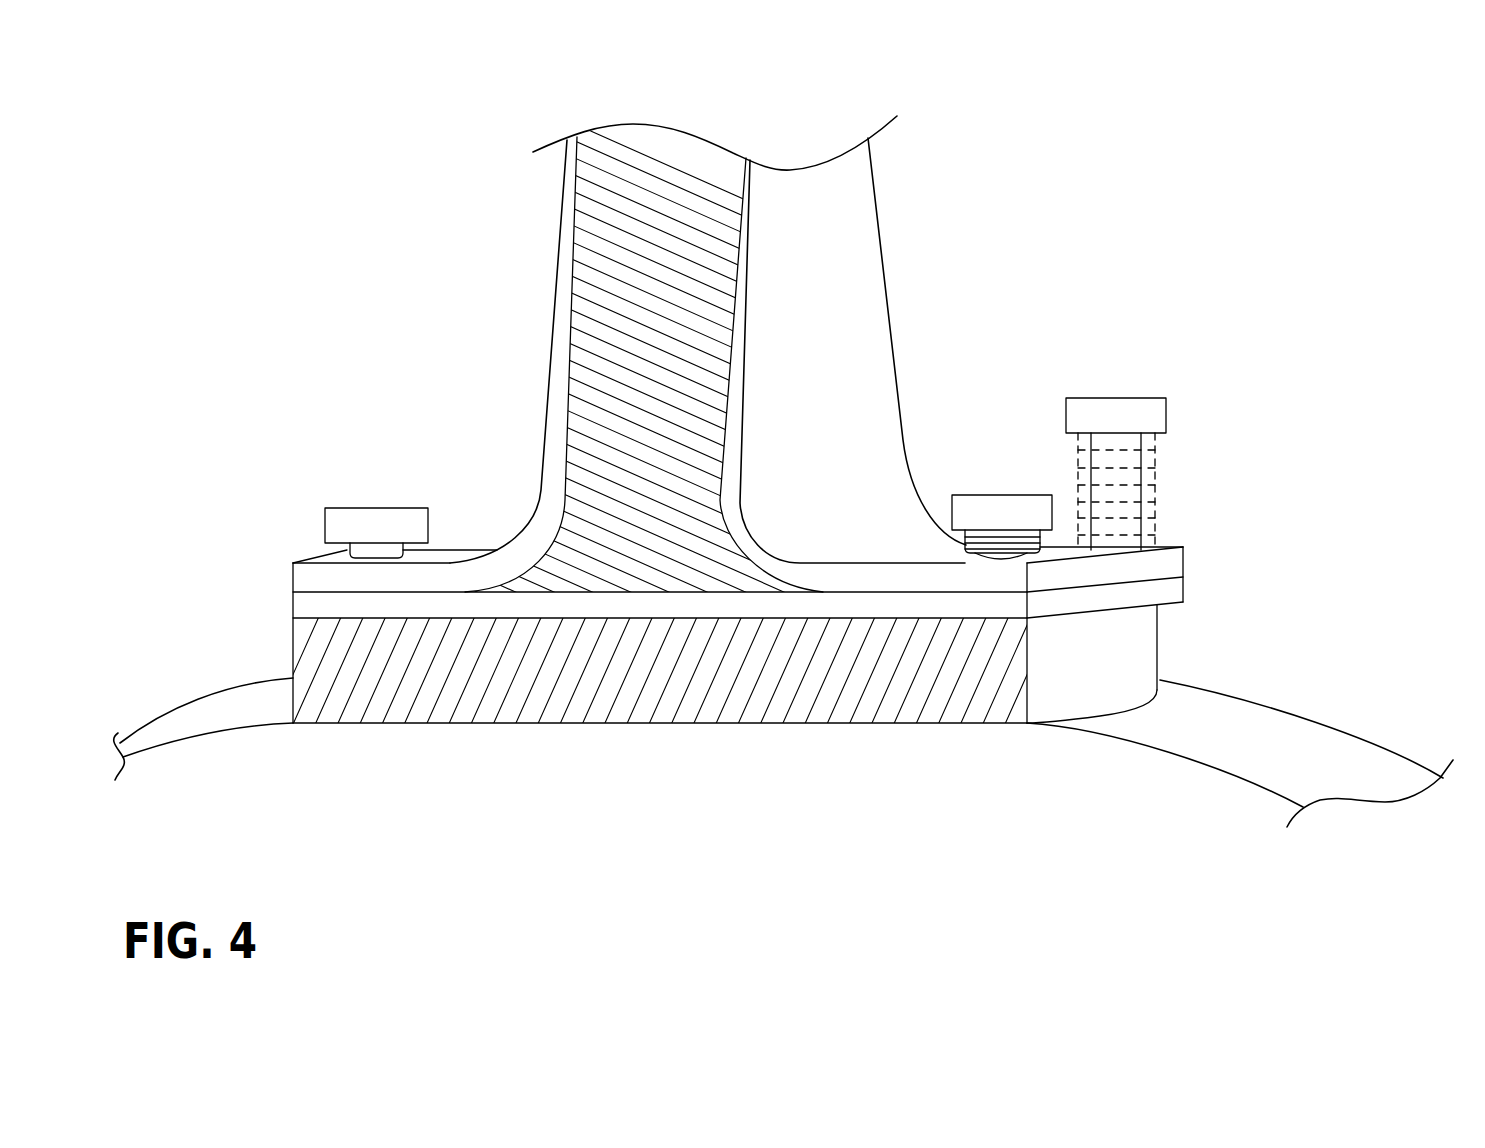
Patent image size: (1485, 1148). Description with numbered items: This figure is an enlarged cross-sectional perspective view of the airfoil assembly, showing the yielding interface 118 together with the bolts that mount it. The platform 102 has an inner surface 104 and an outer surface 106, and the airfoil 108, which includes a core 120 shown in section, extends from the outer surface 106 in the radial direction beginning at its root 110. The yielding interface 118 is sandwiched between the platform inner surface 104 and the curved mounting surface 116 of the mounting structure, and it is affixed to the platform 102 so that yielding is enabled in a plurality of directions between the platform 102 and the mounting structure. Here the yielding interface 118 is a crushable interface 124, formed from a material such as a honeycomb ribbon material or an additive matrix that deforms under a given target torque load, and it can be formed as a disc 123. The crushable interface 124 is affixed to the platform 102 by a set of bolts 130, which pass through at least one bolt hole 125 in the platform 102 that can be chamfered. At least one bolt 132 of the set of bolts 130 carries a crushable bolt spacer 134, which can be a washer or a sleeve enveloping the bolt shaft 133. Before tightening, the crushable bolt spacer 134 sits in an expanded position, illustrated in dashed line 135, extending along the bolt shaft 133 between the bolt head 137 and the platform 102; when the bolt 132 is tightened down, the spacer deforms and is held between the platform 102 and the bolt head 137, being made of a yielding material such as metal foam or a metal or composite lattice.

The platform 102 is at (1162, 568).
The inner surface 104 is at (873, 592).
The outer surface 106 is at (467, 553).
The airfoil 108 is at (837, 230).
The root 110 is at (490, 553).
The curved mounting surface 116 is at (1258, 738).
The yielding interface 118 is at (458, 687).
The core 120 is at (668, 187).
The disc 123 is at (1122, 663).
The crushable interface 124 is at (777, 665).
The bolt hole 125 is at (997, 560).
The set of bolts 130 is at (353, 503).
The bolt 132 is at (1184, 419).
The bolt shaft 133 is at (1118, 513).
The crushable bolt spacer 134 is at (990, 533).
The dashed line 135 is at (1133, 463).
The bolt head 137 is at (1167, 408).